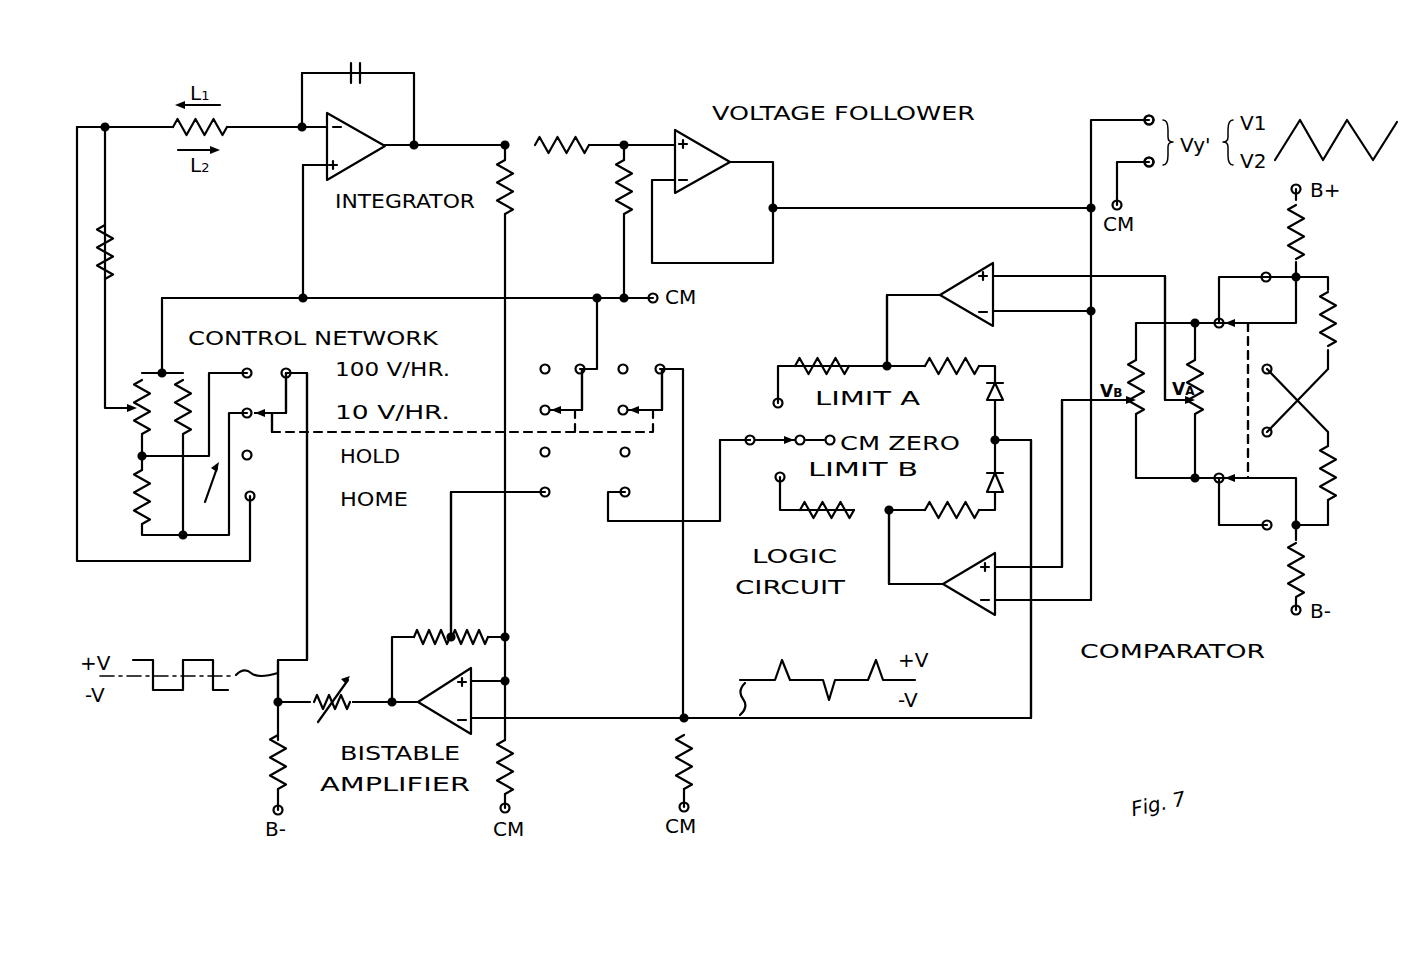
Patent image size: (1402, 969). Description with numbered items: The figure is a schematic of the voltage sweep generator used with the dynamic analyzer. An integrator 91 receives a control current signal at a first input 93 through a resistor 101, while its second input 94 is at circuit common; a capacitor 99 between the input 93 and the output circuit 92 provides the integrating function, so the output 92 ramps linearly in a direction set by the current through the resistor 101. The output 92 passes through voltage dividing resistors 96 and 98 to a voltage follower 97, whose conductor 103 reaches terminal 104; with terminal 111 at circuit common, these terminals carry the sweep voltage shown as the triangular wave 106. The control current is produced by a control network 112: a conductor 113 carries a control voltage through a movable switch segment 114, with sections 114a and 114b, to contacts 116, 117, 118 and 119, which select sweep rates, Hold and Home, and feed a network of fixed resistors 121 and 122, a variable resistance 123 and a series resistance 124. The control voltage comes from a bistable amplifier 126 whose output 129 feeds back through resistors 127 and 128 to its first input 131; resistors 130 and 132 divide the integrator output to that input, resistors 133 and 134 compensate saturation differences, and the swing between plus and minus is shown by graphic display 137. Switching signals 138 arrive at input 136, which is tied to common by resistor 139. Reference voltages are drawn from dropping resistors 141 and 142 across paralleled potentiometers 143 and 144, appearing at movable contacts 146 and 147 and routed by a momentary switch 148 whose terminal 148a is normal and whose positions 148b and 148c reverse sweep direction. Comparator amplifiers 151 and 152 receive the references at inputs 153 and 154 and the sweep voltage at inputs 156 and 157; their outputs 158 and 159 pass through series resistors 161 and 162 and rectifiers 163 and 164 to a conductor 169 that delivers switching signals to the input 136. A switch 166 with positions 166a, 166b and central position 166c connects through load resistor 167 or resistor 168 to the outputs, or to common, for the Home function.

The integrator 91 is at (345, 124).
The output circuit 92 is at (388, 147).
The first input 93 is at (318, 129).
The second input 94 is at (318, 157).
The voltage dividing resistor 96 is at (567, 138).
The voltage follower 97 is at (712, 141).
The voltage dividing resistor 98 is at (622, 181).
The capacitor 99 is at (362, 60).
The resistor 101 is at (185, 120).
The conductor 103 is at (922, 207).
The terminal 104 is at (1148, 118).
The triangular wave 106 is at (1300, 120).
The terminal 111 is at (1153, 168).
The control network 112 is at (212, 497).
The conductor 113 is at (319, 550).
The movable switch segment 114 is at (262, 418).
The switch section 114a is at (571, 391).
The switch section 114b is at (661, 384).
The contact 116 is at (244, 368).
The contact 117 is at (247, 410).
The contact 118 is at (251, 463).
The contact 119 is at (254, 500).
The fixed resistor 121 is at (181, 407).
The fixed resistor 122 is at (135, 503).
The variable resistance 123 is at (138, 423).
The series resistance 124 is at (116, 244).
The bistable amplifier 126 is at (451, 686).
The resistor 127 is at (430, 632).
The resistor 128 is at (455, 630).
The output 129 is at (402, 713).
The resistor 130 is at (510, 188).
The first input 131 is at (492, 684).
The resistor 132 is at (514, 760).
The resistor 133 is at (325, 686).
The resistor 134 is at (275, 760).
The input 136 is at (490, 717).
The graphic display 137 is at (193, 660).
The switching signals 138 is at (780, 664).
The resistor 139 is at (689, 756).
The dropping resistor 141 is at (1305, 226).
The dropping resistor 142 is at (1305, 555).
The potentiometer 143 is at (1134, 408).
The potentiometer 144 is at (1202, 388).
The movable contact 146 is at (1130, 395).
The movable contact 147 is at (1187, 405).
The momentary double-pole, triple-throw switch 148 is at (1280, 307).
The terminal 148a is at (1219, 319).
The position 148b is at (1267, 274).
The position 148c is at (1270, 369).
The differential input amplifier 151 is at (960, 289).
The differential input amplifier 152 is at (970, 577).
The first input 153 is at (1012, 276).
The input 154 is at (1040, 568).
The input 156 is at (1005, 315).
The input 157 is at (1046, 602).
The output 158 is at (915, 295).
The output 159 is at (921, 588).
The series resistor 161 is at (964, 362).
The series resistor 162 is at (948, 518).
The rectifier 163 is at (1002, 388).
The rectifier 164 is at (1017, 495).
The switch 166 is at (770, 440).
The position 166a is at (770, 400).
The position 166b is at (772, 478).
The central position 166c is at (798, 439).
The load resistor 167 is at (822, 364).
The resistor 168 is at (824, 506).
The conductor 169 is at (1015, 438).